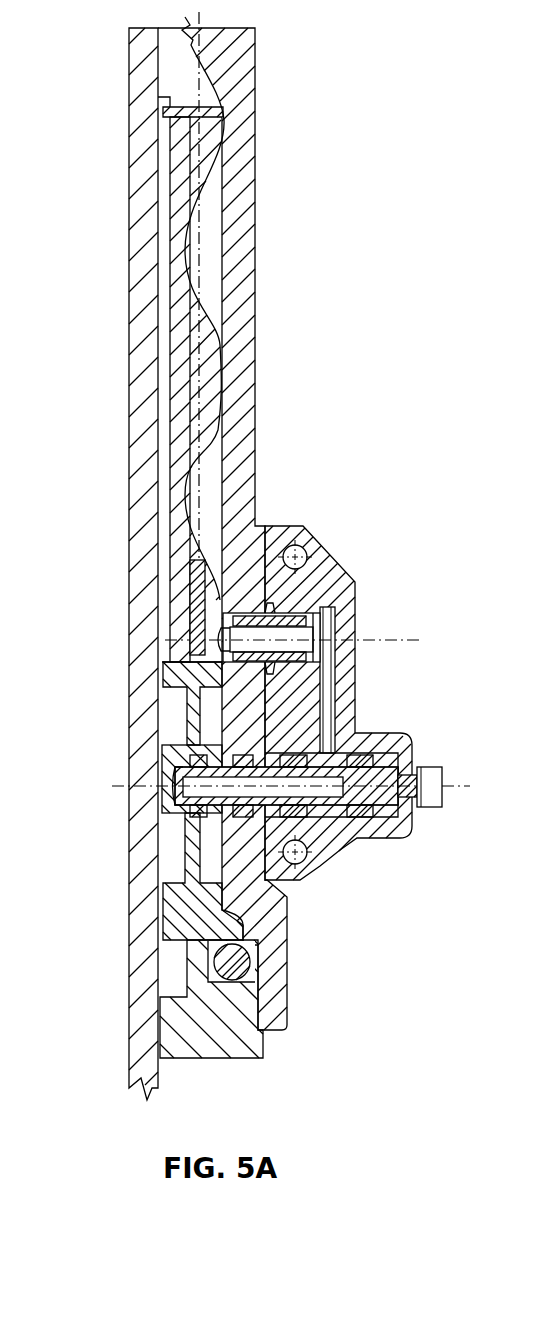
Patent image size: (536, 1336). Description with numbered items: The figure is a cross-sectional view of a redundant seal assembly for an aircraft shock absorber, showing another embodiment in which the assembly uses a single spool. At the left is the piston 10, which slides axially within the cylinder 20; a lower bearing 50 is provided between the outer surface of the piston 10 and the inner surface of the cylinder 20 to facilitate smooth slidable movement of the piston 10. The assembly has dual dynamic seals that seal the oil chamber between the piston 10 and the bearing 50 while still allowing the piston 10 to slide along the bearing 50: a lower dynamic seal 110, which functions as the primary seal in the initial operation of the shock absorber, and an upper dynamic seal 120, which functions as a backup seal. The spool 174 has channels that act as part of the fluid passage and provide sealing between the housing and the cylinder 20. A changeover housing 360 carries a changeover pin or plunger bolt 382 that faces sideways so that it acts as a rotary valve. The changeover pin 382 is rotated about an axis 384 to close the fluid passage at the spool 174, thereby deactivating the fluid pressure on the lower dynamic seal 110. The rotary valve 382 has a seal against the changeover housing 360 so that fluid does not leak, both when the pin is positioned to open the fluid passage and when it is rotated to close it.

The piston 10 is at (160, 1070).
The cylinder 20 is at (255, 182).
The lower bearing 50 is at (177, 362).
The lower dynamic seal 110 is at (175, 855).
The upper dynamic seal 120 is at (175, 723).
The spool 174 is at (223, 617).
The changeover housing 360 is at (355, 608).
The changeover pin 382 is at (425, 808).
The axis 384 is at (460, 786).